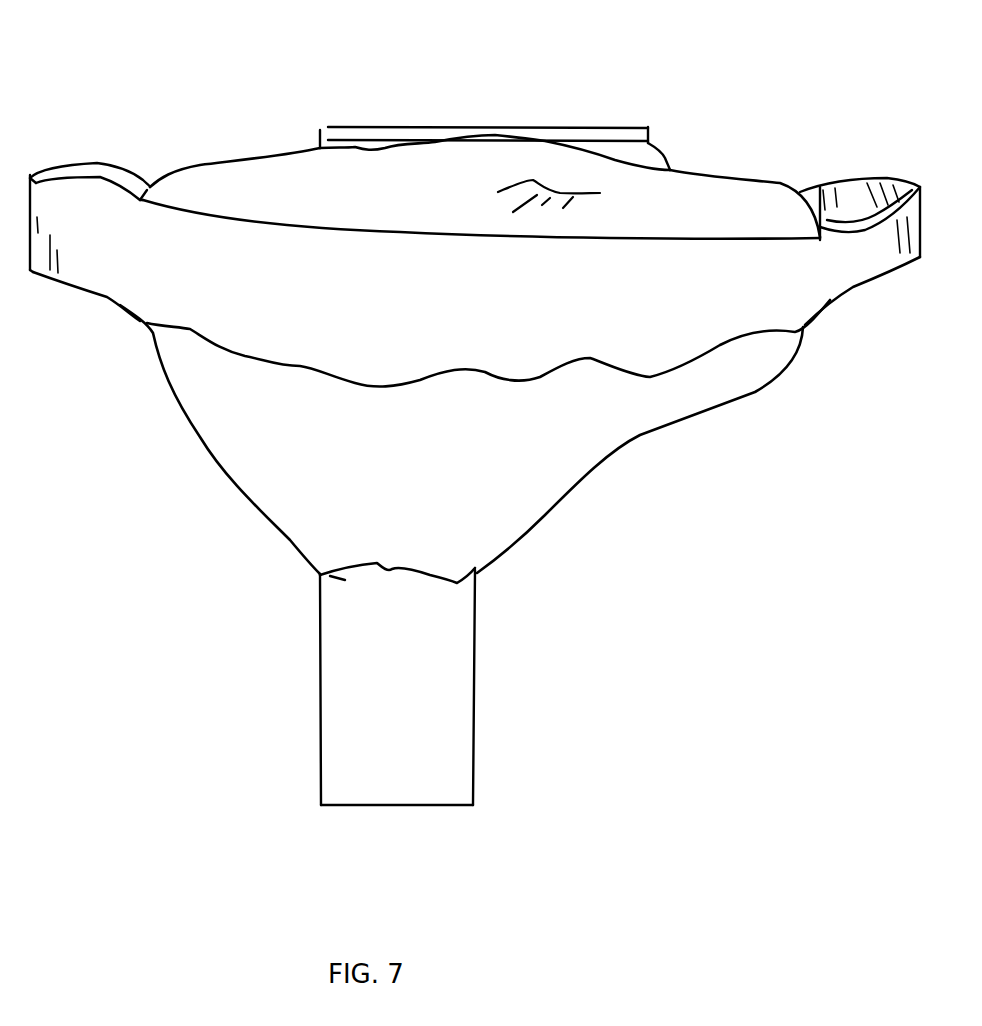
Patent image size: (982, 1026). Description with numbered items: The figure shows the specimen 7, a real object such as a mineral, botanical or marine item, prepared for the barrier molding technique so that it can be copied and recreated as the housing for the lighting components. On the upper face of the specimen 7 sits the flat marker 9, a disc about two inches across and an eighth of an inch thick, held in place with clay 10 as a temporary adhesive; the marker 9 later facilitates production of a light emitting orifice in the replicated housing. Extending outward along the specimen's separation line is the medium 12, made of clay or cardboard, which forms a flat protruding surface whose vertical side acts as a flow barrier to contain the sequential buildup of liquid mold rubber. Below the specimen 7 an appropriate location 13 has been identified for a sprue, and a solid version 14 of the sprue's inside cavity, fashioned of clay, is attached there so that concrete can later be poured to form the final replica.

The specimen 7 is at (255, 188).
The marker 9 is at (555, 137).
The clay 10 is at (645, 155).
The medium 12 is at (53, 162).
The location 13 is at (383, 572).
The solid version of the inside cavity of the sprue 14 is at (442, 673).